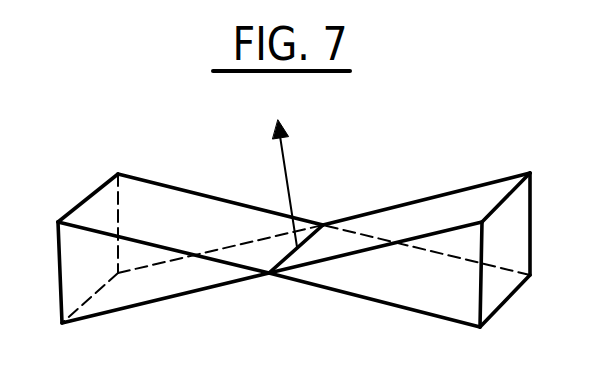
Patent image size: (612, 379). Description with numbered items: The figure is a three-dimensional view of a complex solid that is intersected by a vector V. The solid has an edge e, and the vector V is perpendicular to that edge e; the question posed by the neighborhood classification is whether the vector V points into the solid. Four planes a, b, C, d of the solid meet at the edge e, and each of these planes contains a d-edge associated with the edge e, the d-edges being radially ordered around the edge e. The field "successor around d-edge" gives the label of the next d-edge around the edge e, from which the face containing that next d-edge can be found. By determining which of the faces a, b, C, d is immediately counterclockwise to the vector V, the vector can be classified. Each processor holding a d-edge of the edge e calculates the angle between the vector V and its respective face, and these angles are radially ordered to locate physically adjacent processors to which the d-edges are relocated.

The plane c C is at (108, 210).
The vector V is at (282, 170).
The edge e is at (304, 226).
The plane b is at (467, 203).
The plane a is at (452, 293).
The plane d is at (150, 282).